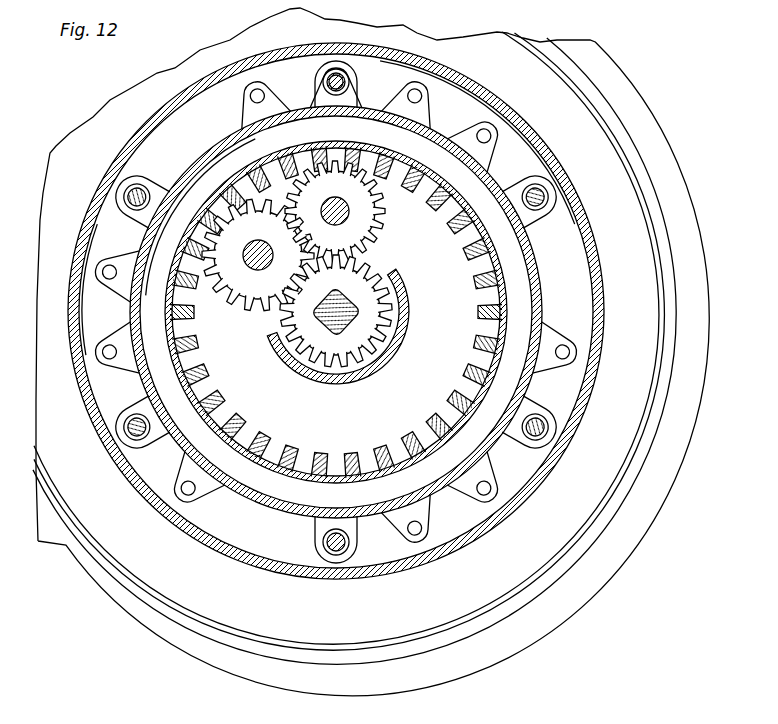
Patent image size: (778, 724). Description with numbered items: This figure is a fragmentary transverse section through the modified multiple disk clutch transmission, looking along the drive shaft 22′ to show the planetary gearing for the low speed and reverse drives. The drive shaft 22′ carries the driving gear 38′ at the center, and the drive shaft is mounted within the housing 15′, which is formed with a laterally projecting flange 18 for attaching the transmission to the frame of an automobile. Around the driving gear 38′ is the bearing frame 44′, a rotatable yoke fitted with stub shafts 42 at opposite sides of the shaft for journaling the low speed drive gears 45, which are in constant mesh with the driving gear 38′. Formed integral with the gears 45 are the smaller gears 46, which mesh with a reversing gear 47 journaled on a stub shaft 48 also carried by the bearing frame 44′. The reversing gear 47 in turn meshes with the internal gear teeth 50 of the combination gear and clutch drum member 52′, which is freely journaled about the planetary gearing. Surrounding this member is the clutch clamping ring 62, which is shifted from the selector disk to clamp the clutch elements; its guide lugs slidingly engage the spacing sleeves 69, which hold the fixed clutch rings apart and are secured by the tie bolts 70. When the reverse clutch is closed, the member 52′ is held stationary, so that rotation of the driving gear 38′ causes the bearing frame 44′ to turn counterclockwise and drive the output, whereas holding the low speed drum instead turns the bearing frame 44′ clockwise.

The laterally projecting flange 18 is at (623, 97).
The housing 15′ is at (590, 227).
The tie bolts 70 is at (358, 337).
The spacing sleeves 69 is at (346, 350).
The clutch clamping ring 62 is at (533, 277).
The smaller gears 46 is at (242, 129).
The combination gear and clutch drum member 52′ is at (497, 313).
The internal gear teeth 50 is at (483, 320).
The driving gear 38′ is at (386, 285).
The stub shafts 48 is at (252, 243).
The reversing gears 47 is at (240, 285).
The stub shafts 42 is at (350, 211).
The low speed drive gears 45 is at (386, 226).
The bearing frame 44′ is at (368, 366).
The drive shaft 22′ is at (323, 328).